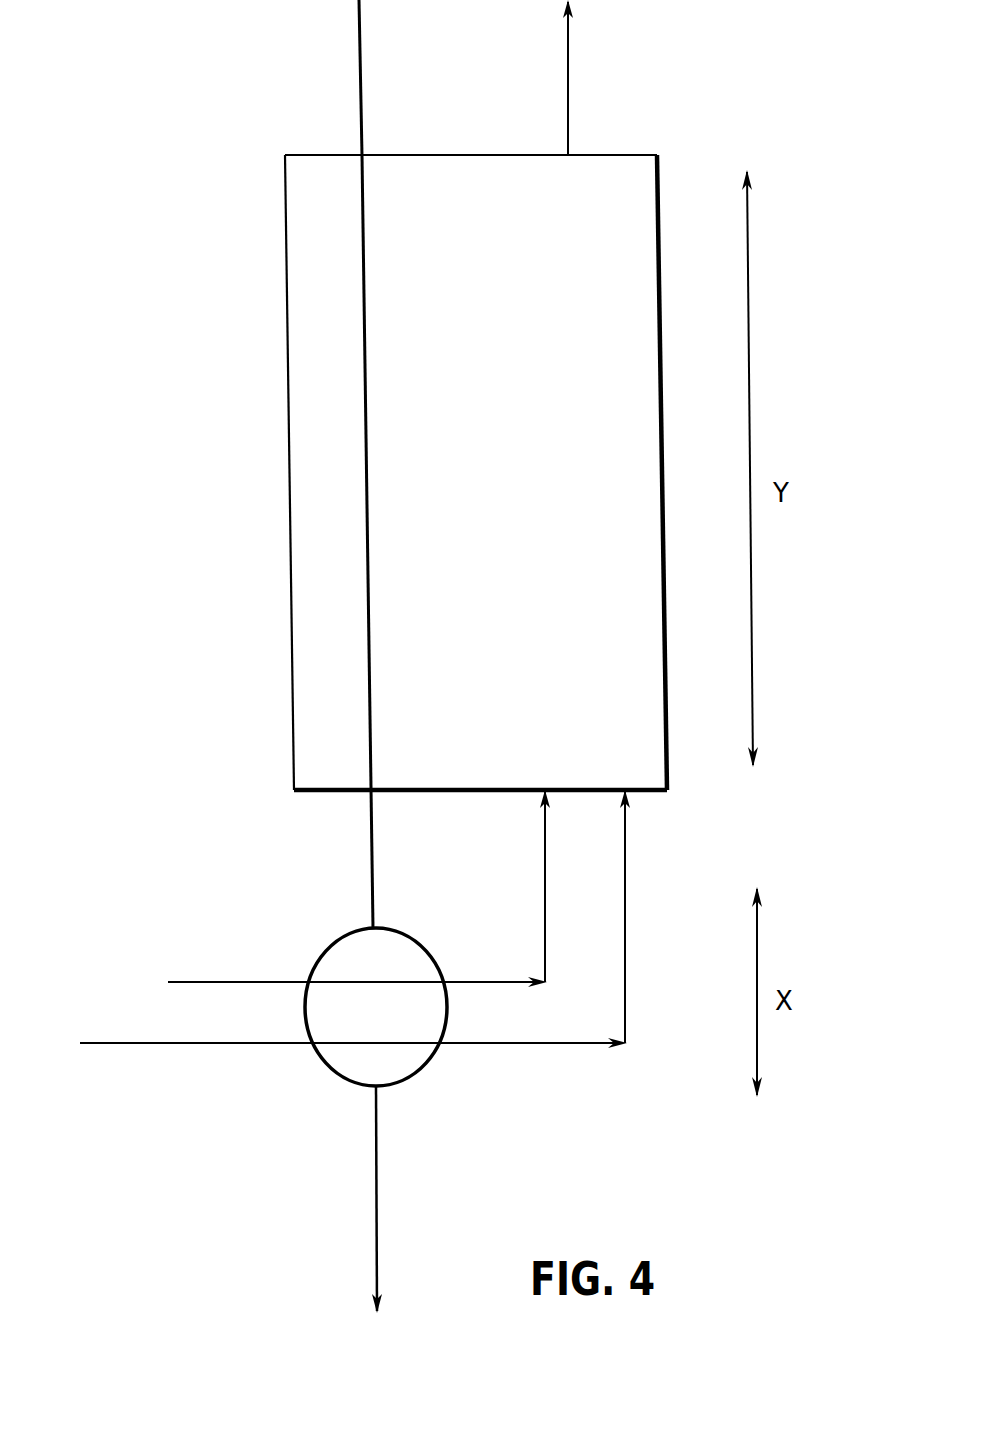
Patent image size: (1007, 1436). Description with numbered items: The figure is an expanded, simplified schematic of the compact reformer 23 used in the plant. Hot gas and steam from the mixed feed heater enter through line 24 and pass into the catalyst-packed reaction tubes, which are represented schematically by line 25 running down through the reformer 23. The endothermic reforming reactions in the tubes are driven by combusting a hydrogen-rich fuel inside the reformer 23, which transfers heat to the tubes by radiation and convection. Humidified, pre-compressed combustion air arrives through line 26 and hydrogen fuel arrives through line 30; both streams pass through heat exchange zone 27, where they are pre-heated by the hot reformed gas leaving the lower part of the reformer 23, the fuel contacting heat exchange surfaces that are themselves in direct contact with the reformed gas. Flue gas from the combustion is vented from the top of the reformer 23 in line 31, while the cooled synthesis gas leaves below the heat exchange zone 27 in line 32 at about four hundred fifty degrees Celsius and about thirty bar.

The compact reformer 23 is at (812, 612).
The line 24 is at (360, 63).
The line representing reaction tubes 25 is at (367, 471).
The combustion air line 26 is at (205, 1048).
The heat exchange zone 27 is at (332, 940).
The fuel line 30 is at (210, 980).
The flue gas line 31 is at (568, 90).
The synthesis gas line 32 is at (378, 1237).